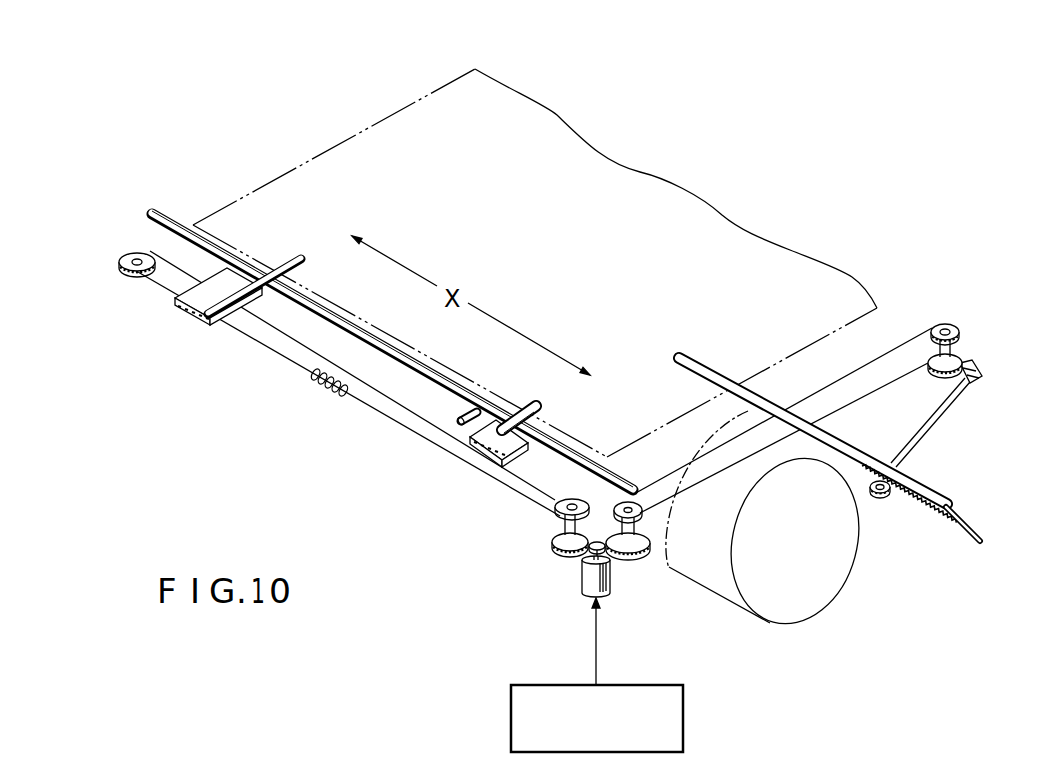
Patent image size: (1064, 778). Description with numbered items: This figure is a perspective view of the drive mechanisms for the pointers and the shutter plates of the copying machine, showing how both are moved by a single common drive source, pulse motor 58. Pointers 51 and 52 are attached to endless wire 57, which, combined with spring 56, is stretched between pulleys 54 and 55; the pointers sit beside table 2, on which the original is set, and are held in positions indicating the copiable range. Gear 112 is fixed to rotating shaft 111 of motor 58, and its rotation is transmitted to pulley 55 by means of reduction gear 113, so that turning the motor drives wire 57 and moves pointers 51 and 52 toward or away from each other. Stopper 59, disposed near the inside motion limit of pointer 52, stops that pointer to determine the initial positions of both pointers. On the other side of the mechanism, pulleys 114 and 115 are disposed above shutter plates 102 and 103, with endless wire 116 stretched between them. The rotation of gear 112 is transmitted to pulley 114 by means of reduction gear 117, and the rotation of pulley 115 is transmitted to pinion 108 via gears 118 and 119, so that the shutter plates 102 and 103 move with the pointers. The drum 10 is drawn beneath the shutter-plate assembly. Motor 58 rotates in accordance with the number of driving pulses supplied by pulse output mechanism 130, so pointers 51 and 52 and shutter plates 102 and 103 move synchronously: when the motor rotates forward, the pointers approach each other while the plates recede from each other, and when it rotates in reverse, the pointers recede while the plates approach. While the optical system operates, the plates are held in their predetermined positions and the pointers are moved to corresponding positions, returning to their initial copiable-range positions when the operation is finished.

The table 2 is at (330, 150).
The platen drum 10 is at (852, 558).
The pointer 51 is at (190, 305).
The pointer 52 is at (480, 452).
The pulley 54 is at (119, 260).
The pulley 55 is at (552, 505).
The spring 56 is at (317, 388).
The endless wire 57 is at (397, 424).
The pulse motor 58 is at (582, 585).
The stopper 59 is at (447, 424).
The shutter plate 102 is at (934, 489).
The shutter plate 103 is at (978, 532).
The pinion 108 is at (880, 494).
The rotating shaft 111 is at (580, 560).
The gear 112 is at (597, 540).
The reduction gear 113 is at (553, 541).
The pulley 114 is at (627, 497).
The pulley 115 is at (950, 325).
The endless wire 116 is at (866, 365).
The reduction gear 117 is at (637, 551).
The gear 118 is at (962, 358).
The gear 119 is at (982, 378).
The pulse output mechanism 130 is at (683, 718).